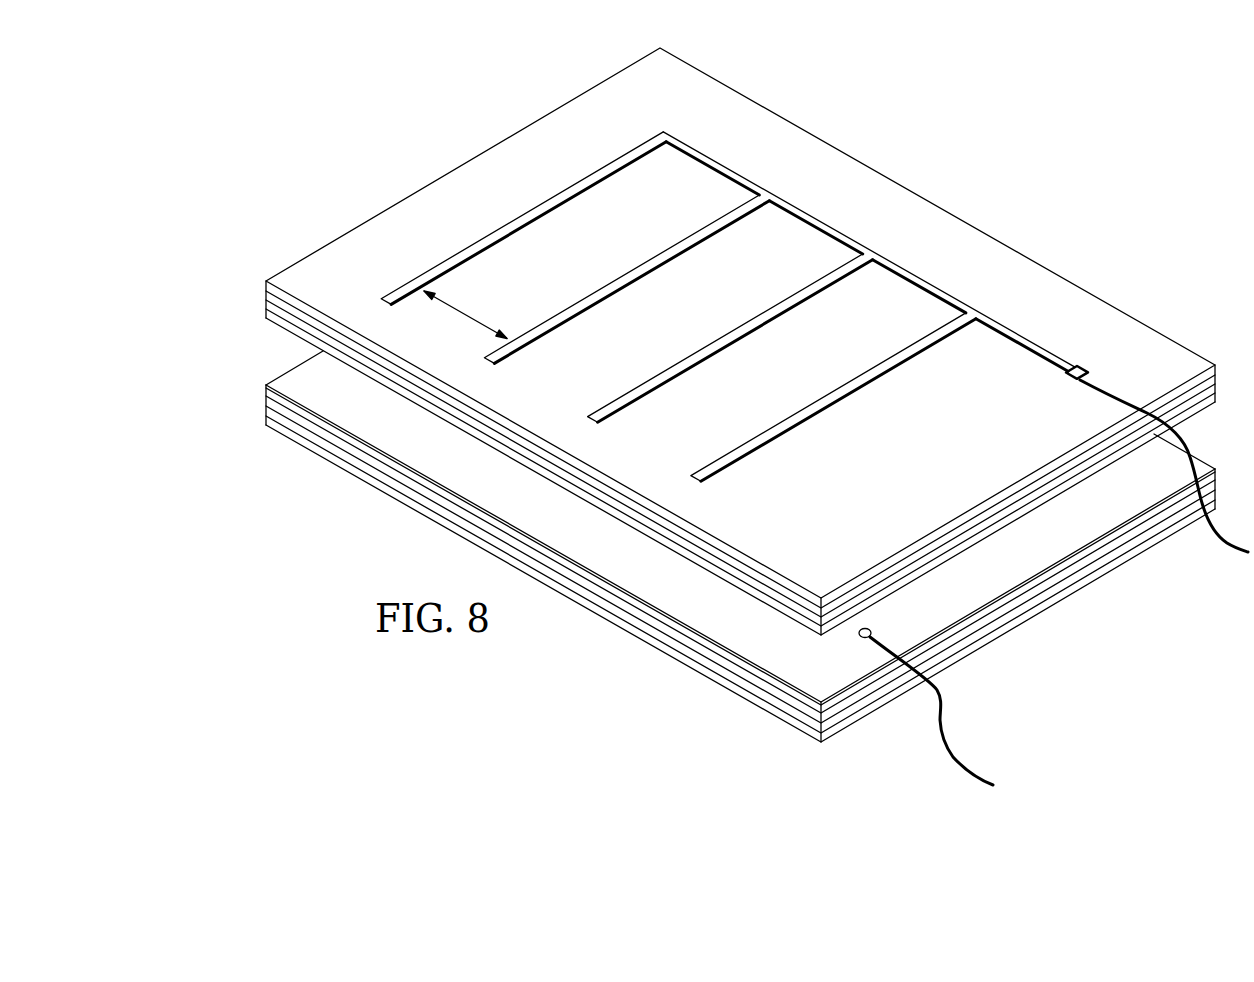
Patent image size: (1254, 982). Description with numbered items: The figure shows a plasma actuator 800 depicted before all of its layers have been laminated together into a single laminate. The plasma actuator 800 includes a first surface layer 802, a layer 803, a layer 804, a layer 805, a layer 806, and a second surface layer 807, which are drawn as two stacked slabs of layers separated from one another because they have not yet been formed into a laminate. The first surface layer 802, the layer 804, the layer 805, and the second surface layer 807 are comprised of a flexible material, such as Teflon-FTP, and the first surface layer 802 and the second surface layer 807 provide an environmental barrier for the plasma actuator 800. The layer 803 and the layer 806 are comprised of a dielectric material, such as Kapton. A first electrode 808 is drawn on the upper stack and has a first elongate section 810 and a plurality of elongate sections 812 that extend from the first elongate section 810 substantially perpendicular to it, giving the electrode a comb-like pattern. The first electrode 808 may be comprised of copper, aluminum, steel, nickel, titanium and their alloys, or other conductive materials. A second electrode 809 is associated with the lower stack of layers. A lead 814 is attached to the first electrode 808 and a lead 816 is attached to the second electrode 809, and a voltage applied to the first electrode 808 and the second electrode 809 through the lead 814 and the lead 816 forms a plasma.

The plasma actuator 800 is at (990, 121).
The first surface layer 802 is at (468, 175).
The layer 803 is at (265, 296).
The layer 804 is at (265, 308).
The layer 805 is at (265, 397).
The layer 806 is at (265, 407).
The second surface layer 807 is at (685, 665).
The first electrode 808 is at (942, 280).
The second electrode 809 is at (393, 445).
The first elongate section 810 is at (805, 222).
The plurality of elongate sections 812 is at (838, 392).
The lead 814 is at (1231, 549).
The lead 816 is at (980, 783).